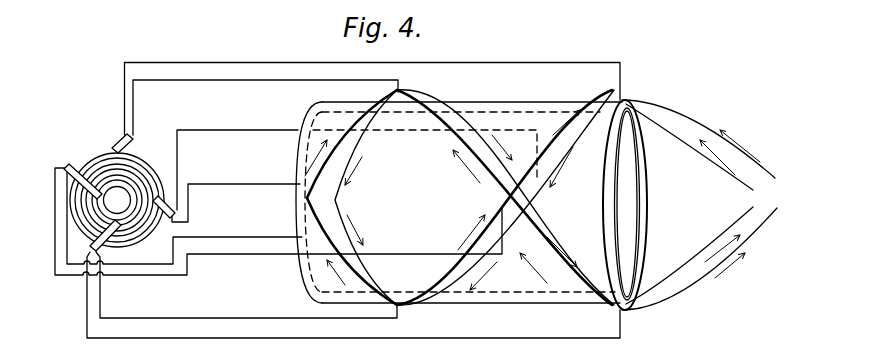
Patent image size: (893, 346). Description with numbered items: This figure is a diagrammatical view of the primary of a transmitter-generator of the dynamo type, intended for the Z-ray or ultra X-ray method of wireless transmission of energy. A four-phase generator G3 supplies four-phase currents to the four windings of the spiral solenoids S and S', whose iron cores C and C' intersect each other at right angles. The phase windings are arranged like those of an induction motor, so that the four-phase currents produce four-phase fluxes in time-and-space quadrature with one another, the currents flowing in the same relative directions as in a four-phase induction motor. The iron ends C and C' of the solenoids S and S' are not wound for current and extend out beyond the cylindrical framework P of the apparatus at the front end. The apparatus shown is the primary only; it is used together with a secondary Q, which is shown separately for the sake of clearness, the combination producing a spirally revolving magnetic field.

The four-phase generator G3 is at (119, 189).
The spiral solenoid winding S is at (473, 197).
The spiral solenoid winding S' is at (460, 190).
The secondary Q is at (536, 111).
The cylindrical framework P is at (647, 190).
The iron core C is at (689, 204).
The iron core C' is at (705, 205).